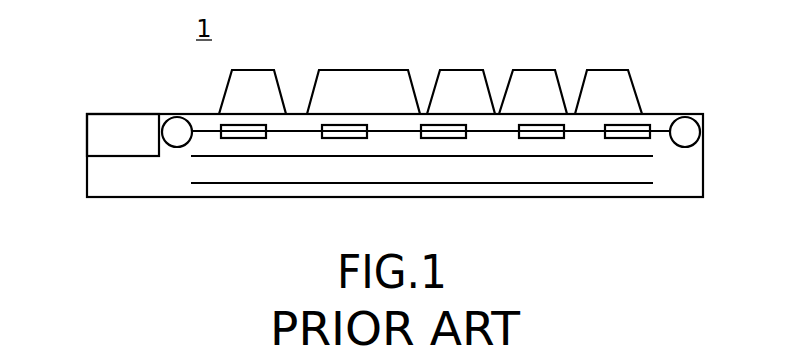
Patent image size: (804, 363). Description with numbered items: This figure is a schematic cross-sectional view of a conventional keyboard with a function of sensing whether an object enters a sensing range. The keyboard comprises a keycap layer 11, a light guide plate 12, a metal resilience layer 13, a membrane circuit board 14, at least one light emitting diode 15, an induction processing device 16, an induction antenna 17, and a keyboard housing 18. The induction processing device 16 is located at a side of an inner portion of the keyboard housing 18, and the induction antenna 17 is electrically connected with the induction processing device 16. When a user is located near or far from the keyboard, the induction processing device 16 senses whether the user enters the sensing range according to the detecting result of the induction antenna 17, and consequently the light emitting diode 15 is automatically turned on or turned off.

The keycap layer 11 is at (535, 68).
The light guide plate 12 is at (592, 130).
The metal resilience layer 13 is at (638, 157).
The membrane circuit board 14 is at (578, 183).
The light emitting diode 15 is at (242, 131).
The induction processing device 16 is at (98, 140).
The induction antenna 17 is at (173, 127).
The keyboard housing 18 is at (703, 163).